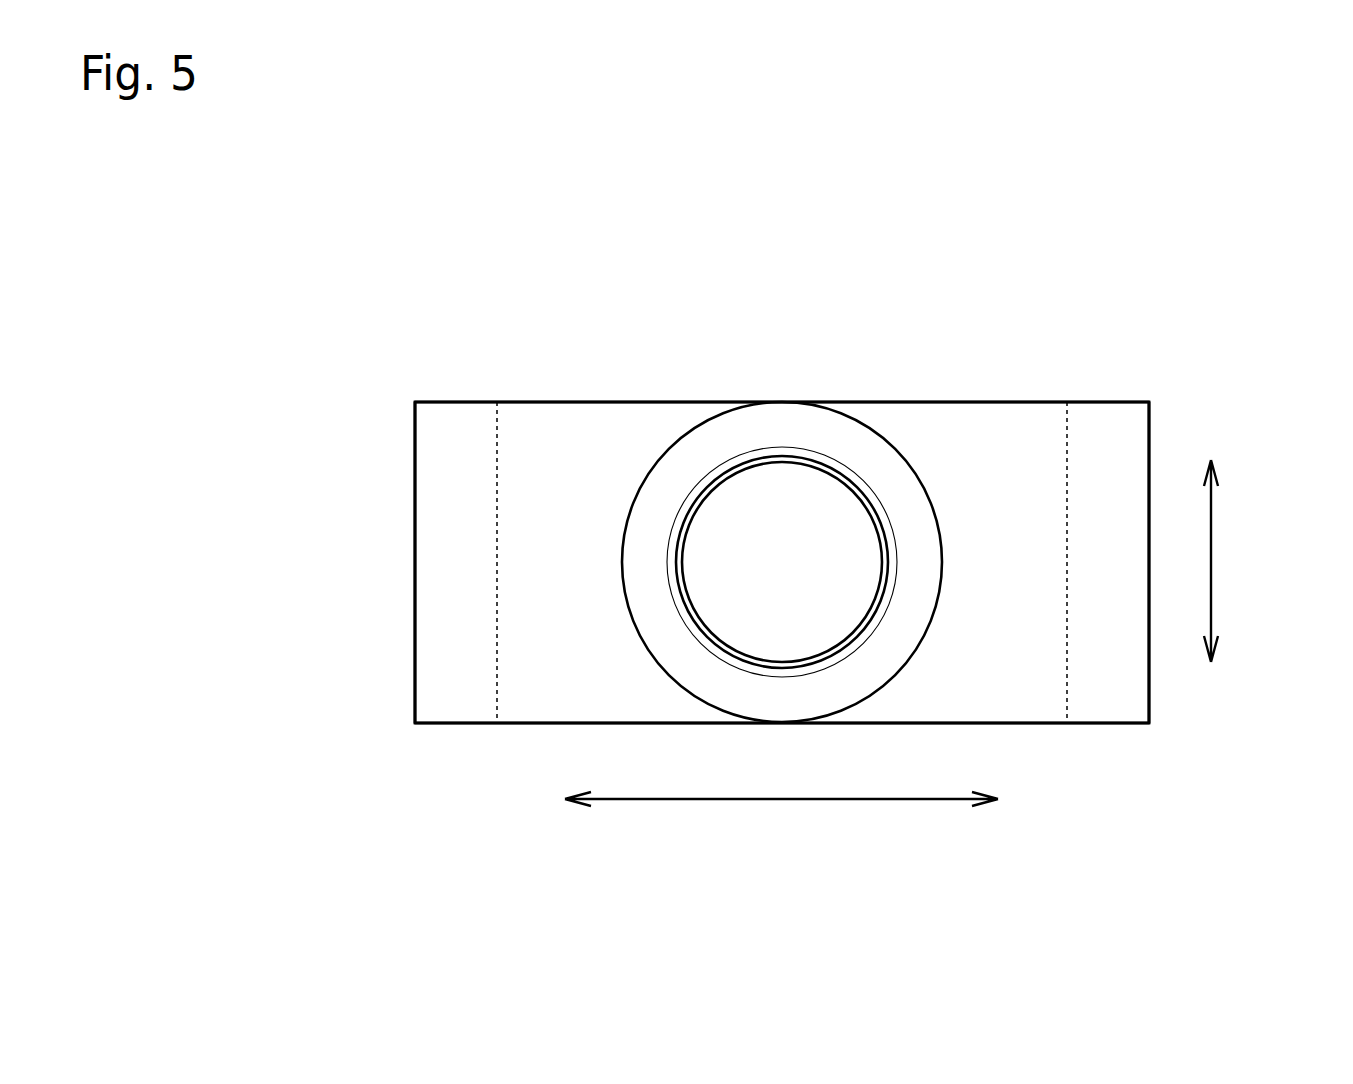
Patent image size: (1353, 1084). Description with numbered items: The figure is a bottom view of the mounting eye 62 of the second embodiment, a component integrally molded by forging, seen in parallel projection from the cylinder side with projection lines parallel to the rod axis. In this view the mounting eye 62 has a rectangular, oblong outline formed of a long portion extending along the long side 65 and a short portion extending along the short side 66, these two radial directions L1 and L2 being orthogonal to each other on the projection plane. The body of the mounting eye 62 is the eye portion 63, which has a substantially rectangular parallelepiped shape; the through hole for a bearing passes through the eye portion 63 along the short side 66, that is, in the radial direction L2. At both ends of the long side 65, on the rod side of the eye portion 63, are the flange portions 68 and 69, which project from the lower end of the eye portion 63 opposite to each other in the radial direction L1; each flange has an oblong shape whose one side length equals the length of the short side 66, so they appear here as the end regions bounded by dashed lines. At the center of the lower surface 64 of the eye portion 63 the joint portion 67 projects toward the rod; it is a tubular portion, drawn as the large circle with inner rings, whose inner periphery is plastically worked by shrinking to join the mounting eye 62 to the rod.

The mounting eye 62 is at (1096, 212).
The eye portion 63 is at (594, 442).
The lower surface 64 is at (782, 479).
The long side 65 is at (968, 402).
The short side 66 is at (415, 498).
The joint portion 67 is at (833, 440).
The flange portion 68 is at (467, 442).
The flange portion 69 is at (1103, 422).
The radial direction L1 is at (792, 799).
The radial direction L2 is at (1211, 546).